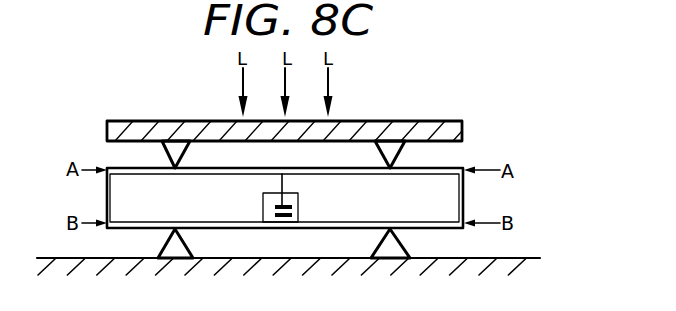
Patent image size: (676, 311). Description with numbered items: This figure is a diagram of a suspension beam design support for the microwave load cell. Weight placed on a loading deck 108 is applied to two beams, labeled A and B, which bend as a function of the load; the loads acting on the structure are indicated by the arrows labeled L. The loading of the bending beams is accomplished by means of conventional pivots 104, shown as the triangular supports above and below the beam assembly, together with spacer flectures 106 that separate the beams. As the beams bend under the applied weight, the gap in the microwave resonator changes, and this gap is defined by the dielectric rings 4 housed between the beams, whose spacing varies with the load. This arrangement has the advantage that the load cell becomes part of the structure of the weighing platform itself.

The pivot 104 is at (164, 146).
The spacer flecture 106 is at (107, 196).
The loading deck 108 is at (426, 121).
The dielectric ring 4 is at (275, 206).